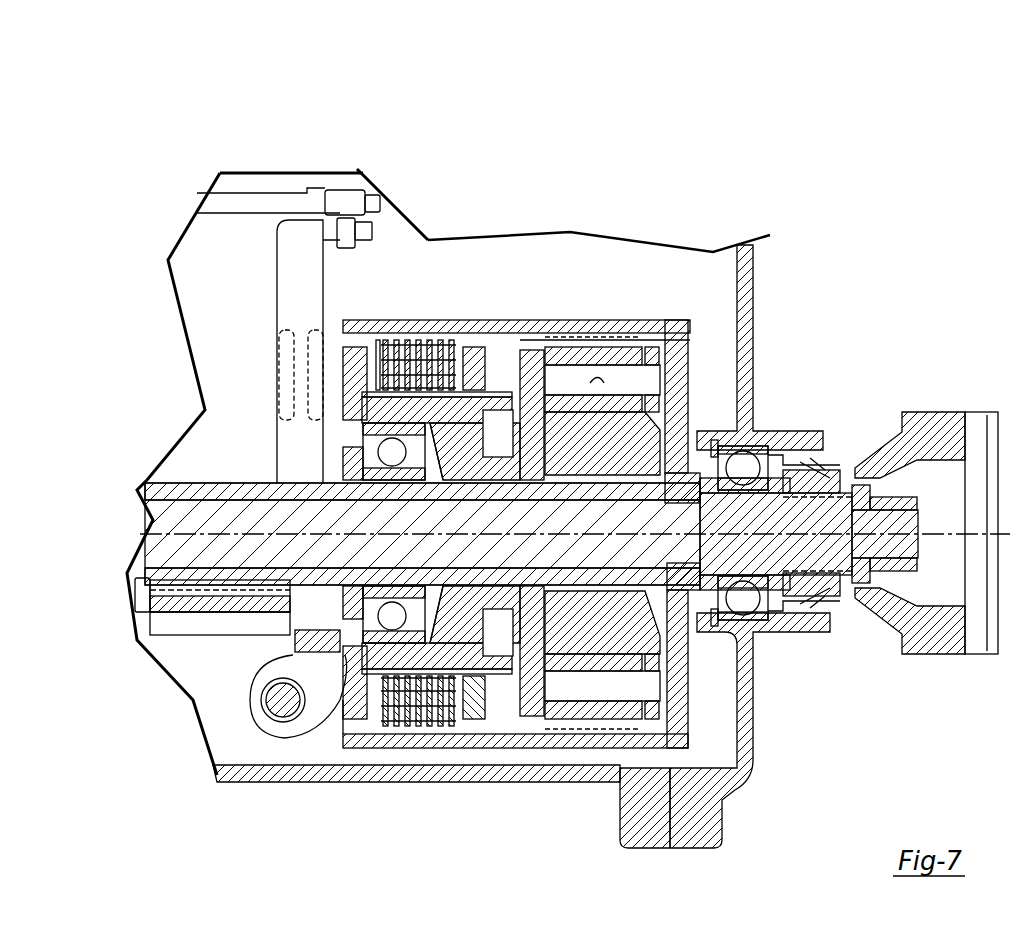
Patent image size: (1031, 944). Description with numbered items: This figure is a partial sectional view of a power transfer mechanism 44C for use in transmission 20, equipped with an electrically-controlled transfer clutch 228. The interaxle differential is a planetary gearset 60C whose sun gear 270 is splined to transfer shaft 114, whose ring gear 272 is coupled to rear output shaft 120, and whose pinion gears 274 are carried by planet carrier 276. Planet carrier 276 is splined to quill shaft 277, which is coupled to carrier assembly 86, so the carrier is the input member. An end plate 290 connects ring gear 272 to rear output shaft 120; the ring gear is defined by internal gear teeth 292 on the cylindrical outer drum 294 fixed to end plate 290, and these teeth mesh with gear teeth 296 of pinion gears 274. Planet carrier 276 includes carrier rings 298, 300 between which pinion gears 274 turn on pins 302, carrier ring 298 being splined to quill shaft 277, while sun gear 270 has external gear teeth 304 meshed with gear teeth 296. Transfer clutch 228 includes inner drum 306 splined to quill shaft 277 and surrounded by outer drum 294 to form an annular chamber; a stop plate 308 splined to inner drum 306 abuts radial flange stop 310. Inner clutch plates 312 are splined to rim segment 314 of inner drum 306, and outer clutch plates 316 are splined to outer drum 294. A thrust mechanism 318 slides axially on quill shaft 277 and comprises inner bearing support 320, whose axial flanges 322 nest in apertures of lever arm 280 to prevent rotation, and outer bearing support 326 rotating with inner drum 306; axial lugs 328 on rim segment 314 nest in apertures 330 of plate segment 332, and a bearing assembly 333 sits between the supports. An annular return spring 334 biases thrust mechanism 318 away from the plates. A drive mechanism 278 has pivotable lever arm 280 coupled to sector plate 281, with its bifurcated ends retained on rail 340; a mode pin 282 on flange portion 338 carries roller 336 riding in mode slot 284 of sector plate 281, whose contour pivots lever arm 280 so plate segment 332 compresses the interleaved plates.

The transmission 20 is at (852, 332).
The power transfer mechanism 44C is at (128, 526).
The planetary gearset 60C is at (684, 436).
The carrier assembly 86 is at (150, 640).
The transfer shaft 114 is at (150, 520).
The rear output shaft 120 is at (930, 480).
The transfer clutch 228 is at (463, 323).
The sun gear 270 is at (622, 470).
The ring gear 272 is at (575, 748).
The pinion gears 274 is at (538, 750).
The planet carrier 276 is at (688, 403).
The quill shaft 277 is at (150, 478).
The drive mechanism 278 is at (185, 196).
The lever arm 280 is at (268, 302).
The sector plate 281 is at (248, 190).
The mode pin 282 is at (338, 218).
The mode slot 284 is at (368, 200).
The end plate 290 is at (680, 676).
The internal gear teeth 292 is at (690, 705).
The outer drum 294 is at (365, 780).
The gear teeth 296 is at (615, 770).
The carrier ring 298 is at (555, 345).
The carrier ring 300 is at (670, 690).
The pins 302 is at (605, 380).
The external gear teeth 304 is at (530, 460).
The inner drum 306 is at (450, 470).
The stop plate 308 is at (500, 320).
The radial flange stop 310 is at (480, 750).
The inner clutch plates 312 is at (355, 345).
The rim segment 314 is at (355, 480).
The outer clutch plates 316 is at (420, 750).
The thrust mechanism 318 is at (355, 440).
The inner bearing support 320 is at (300, 500).
The axial flanges 322 is at (305, 635).
The outer bearing support 326 is at (400, 650).
The axial lugs 328 is at (370, 394).
The apertures 330 is at (370, 400).
The plate segment 332 is at (325, 740).
The bearing assembly 333 is at (375, 650).
The return spring 334 is at (470, 650).
The roller 336 is at (345, 222).
The flange portion 338 is at (368, 240).
The rail 340 is at (270, 720).